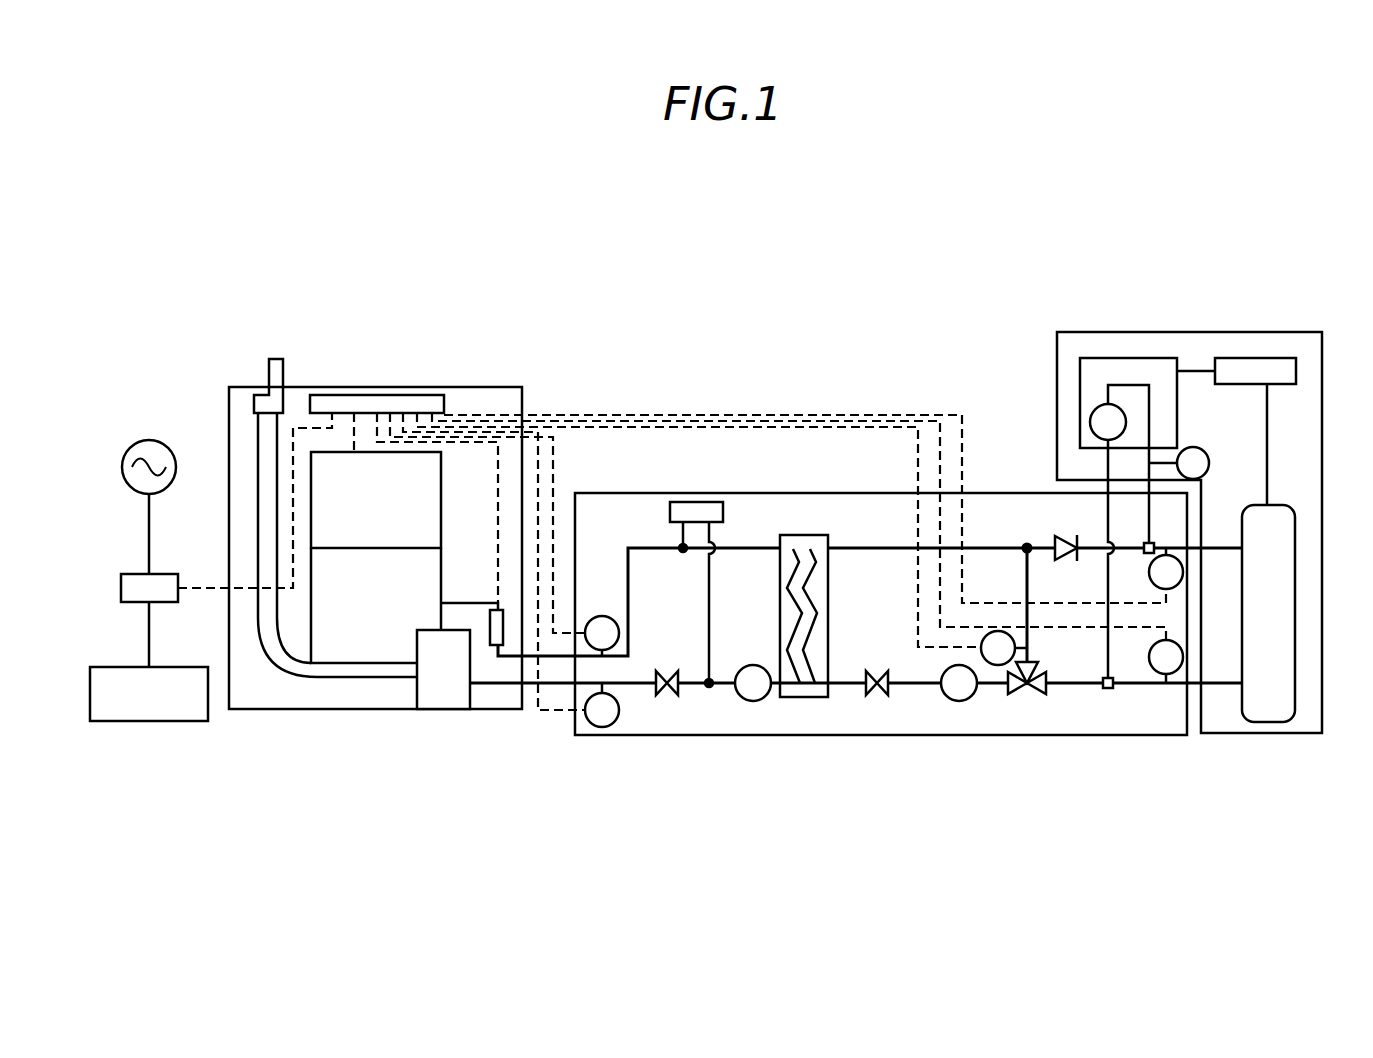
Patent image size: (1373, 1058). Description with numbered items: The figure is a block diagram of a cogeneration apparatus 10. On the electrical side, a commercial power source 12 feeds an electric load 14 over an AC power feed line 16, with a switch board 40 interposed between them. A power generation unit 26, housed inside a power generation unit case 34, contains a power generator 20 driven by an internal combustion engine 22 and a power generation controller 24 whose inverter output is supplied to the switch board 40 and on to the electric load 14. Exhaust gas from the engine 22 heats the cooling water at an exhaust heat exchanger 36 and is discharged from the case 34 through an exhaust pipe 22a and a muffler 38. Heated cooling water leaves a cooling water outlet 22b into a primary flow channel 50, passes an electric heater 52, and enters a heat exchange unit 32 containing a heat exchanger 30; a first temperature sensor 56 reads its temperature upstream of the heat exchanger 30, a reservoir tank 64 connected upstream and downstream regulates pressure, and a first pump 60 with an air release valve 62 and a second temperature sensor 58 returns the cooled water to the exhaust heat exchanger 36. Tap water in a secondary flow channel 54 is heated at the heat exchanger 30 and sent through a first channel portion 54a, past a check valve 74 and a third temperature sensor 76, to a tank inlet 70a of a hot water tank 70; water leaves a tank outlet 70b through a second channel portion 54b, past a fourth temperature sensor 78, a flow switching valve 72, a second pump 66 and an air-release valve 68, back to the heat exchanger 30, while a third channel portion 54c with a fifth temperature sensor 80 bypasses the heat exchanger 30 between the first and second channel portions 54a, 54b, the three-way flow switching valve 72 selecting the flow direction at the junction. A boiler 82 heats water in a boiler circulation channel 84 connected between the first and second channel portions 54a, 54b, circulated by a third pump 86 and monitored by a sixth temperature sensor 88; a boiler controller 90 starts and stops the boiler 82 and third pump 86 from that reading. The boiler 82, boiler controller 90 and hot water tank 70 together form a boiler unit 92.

The cogeneration apparatus 10 is at (677, 298).
The commercial power source 12 is at (132, 440).
The electric load 14 is at (90, 690).
The AC power feed line 16 is at (148, 640).
The power generator 20 is at (442, 477).
The internal combustion engine 22 is at (442, 560).
The exhaust pipe 22a is at (275, 658).
The cooling water outlet 22b is at (442, 601).
The power generation controller 24 is at (428, 394).
The power generation unit 26 is at (373, 366).
The heat exchanger 30 is at (797, 535).
The heat exchange unit 32 is at (797, 492).
The power generation unit case 34 is at (524, 455).
The exhaust heat exchanger 36 is at (440, 710).
The muffler 38 is at (283, 368).
The switch board 40 is at (135, 574).
The primary flow channel 50 is at (630, 580).
The electric heater 52 is at (485, 640).
The secondary flow channel 54 is at (843, 547).
The first channel portion 54a is at (985, 546).
The second channel portion 54b is at (995, 687).
The third channel portion 54c is at (1025, 578).
The first temperature sensor 56 is at (602, 616).
The second temperature sensor 58 is at (602, 727).
The first pump 60 is at (758, 701).
The air release valve 62 is at (663, 696).
The reservoir tank 64 is at (723, 511).
The second pump 66 is at (959, 701).
The air-release valve 68 is at (876, 696).
The hot water tank 70 is at (1295, 565).
The tank inlet 70a is at (1232, 545).
The tank outlet 70b is at (1240, 688).
The flow switching valve 72 is at (1047, 676).
The check valve 74 is at (1065, 539).
The third temperature sensor 76 is at (1150, 566).
The fourth temperature sensor 78 is at (1150, 662).
The fifth temperature sensor 80 is at (1027, 646).
The boiler 82 is at (1135, 358).
The boiler circulation channel 84 is at (1150, 415).
The third pump 86 is at (1092, 412).
The sixth temperature sensor 88 is at (1205, 452).
The boiler controller 90 is at (1250, 358).
The boiler unit 92 is at (1128, 326).